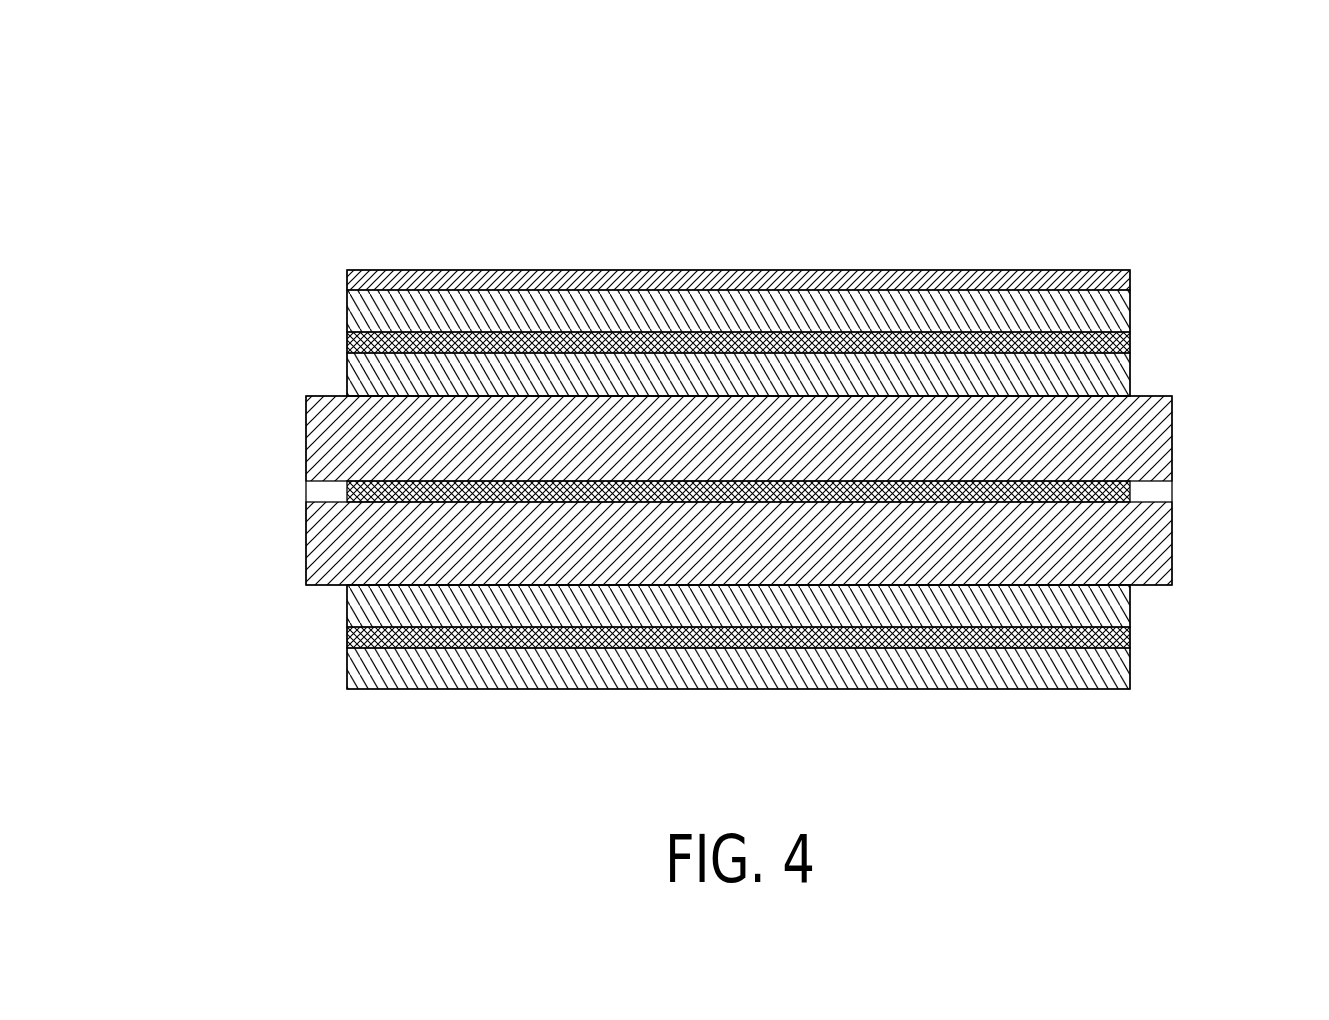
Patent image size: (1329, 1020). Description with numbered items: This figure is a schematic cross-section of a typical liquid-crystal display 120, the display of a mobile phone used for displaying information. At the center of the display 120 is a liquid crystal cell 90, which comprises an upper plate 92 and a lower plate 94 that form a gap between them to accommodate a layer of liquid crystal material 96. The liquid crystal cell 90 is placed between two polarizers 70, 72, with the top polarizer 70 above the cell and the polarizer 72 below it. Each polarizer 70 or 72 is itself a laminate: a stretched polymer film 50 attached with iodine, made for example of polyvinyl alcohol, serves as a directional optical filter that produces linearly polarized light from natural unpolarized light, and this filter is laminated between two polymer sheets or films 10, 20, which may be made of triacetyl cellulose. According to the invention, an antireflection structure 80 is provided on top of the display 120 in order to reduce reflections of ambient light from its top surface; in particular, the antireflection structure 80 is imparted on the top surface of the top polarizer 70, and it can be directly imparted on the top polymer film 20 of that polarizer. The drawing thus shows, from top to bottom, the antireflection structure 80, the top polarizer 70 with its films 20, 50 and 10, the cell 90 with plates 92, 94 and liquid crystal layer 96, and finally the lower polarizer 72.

The polymer film 10 is at (347, 373).
The top polymer film 20 is at (337, 270).
The stretched polymer film 50 is at (348, 343).
The top polarizer 70 is at (1150, 270).
The polarizer 72 is at (1162, 598).
The antireflection structure 80 is at (448, 277).
The liquid crystal cell 90 is at (285, 396).
The upper plate 92 is at (1153, 419).
The lower plate 94 is at (1153, 527).
The layer of liquid crystal material 96 is at (1128, 495).
The display 120 is at (1008, 160).